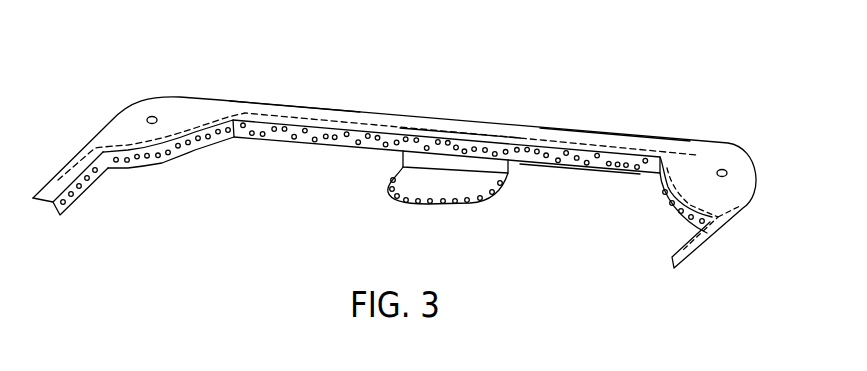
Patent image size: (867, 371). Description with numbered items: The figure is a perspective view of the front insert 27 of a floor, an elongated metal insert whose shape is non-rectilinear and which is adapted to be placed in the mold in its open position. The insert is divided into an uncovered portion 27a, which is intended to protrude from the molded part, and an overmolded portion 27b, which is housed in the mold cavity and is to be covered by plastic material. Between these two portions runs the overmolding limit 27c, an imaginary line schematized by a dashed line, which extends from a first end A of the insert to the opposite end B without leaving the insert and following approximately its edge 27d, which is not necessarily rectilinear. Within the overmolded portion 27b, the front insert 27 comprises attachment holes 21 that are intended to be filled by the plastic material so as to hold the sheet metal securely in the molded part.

The attachment holes 21 is at (180, 160).
The front insert 27 is at (394, 157).
The uncovered portion 27a is at (600, 142).
The overmolded portion 27b is at (570, 167).
The overmolding limit 27c is at (465, 133).
The edge 27d is at (360, 110).
The first end A is at (57, 248).
The opposite end B is at (713, 263).